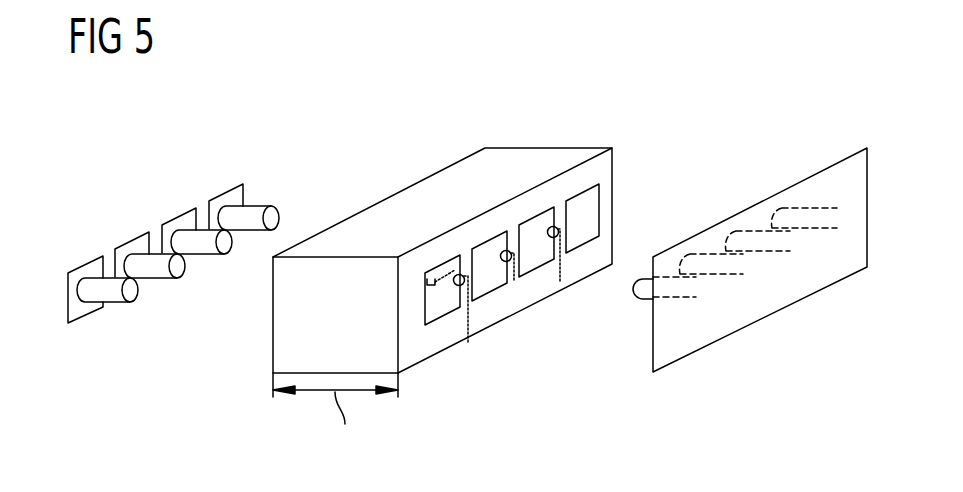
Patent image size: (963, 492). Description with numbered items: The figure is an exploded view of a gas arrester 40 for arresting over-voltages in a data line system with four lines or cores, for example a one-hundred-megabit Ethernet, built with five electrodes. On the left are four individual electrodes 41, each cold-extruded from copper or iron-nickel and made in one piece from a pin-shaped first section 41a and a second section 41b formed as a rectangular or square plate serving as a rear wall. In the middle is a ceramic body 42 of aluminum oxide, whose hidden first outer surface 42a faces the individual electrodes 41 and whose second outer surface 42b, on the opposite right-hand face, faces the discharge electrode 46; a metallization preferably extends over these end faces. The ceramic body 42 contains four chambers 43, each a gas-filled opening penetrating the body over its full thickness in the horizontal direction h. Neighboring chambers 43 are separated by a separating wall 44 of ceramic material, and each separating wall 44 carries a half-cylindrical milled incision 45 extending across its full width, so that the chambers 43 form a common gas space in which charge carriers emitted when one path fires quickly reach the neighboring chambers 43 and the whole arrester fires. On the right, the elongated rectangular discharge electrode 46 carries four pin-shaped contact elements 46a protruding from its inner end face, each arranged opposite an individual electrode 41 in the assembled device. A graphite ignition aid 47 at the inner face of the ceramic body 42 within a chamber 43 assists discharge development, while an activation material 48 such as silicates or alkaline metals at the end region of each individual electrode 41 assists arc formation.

The gas arrester 40 is at (779, 110).
The individual electrode 41 is at (217, 198).
The pin-shaped first section 41a is at (254, 206).
The second section 41b is at (83, 310).
The ceramic body 42 is at (273, 343).
The first outer surface 42a is at (272, 287).
The second outer surface 42b is at (598, 255).
The chamber 43 is at (588, 215).
The separating wall 44 is at (558, 213).
The incision 45 is at (558, 280).
The discharge electrode 46 is at (773, 303).
The contact element 46a is at (803, 212).
The ignition aid 47 is at (435, 283).
The activation material 48 is at (130, 292).